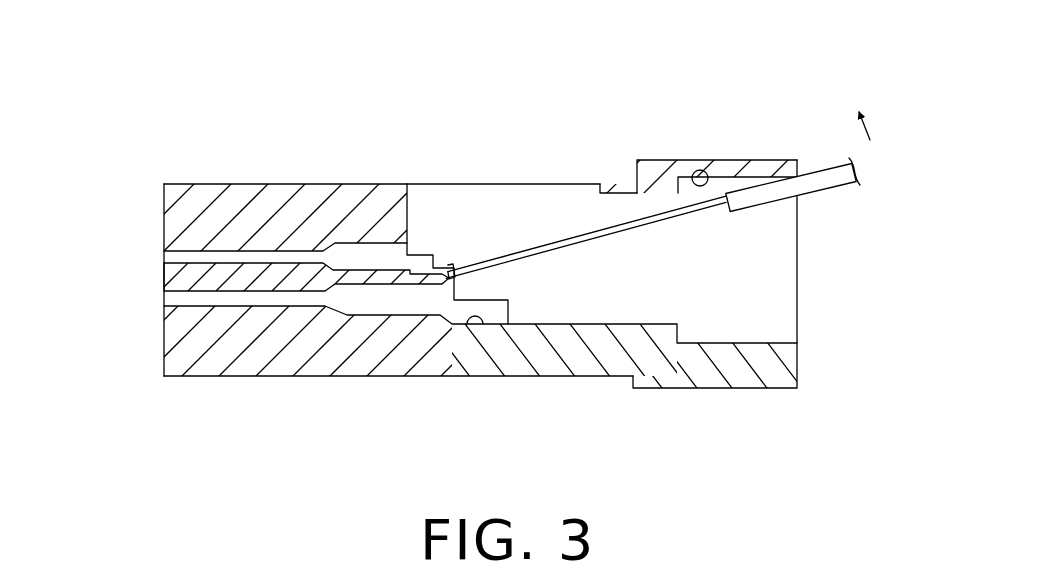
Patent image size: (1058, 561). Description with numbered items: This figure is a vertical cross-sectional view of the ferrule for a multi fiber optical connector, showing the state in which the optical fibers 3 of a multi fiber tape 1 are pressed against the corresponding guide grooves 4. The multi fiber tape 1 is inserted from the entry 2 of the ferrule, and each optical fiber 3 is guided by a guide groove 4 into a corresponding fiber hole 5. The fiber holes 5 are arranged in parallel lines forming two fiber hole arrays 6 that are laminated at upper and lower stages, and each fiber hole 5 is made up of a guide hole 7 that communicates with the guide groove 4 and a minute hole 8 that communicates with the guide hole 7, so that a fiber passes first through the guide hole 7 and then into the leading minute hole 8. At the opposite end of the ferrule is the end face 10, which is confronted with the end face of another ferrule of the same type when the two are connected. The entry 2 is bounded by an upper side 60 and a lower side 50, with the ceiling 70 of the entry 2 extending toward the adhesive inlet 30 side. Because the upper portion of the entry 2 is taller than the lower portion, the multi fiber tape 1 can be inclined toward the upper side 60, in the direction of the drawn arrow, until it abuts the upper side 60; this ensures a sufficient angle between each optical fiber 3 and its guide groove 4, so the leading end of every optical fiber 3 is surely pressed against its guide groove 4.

The multi fiber tape 1 is at (832, 158).
The entry 2 is at (782, 293).
The optical fiber 3 is at (558, 236).
The guide groove 4 is at (434, 265).
The fiber hole 5 is at (234, 128).
The fiber hole array 6 is at (480, 263).
The guide hole 7 is at (356, 243).
The minute hole 8 is at (255, 255).
The end face 10 is at (164, 232).
The adhesive inlet 30 is at (500, 186).
The lower side 50 is at (797, 340).
The upper side 60 is at (709, 172).
The ceiling 70 is at (757, 159).